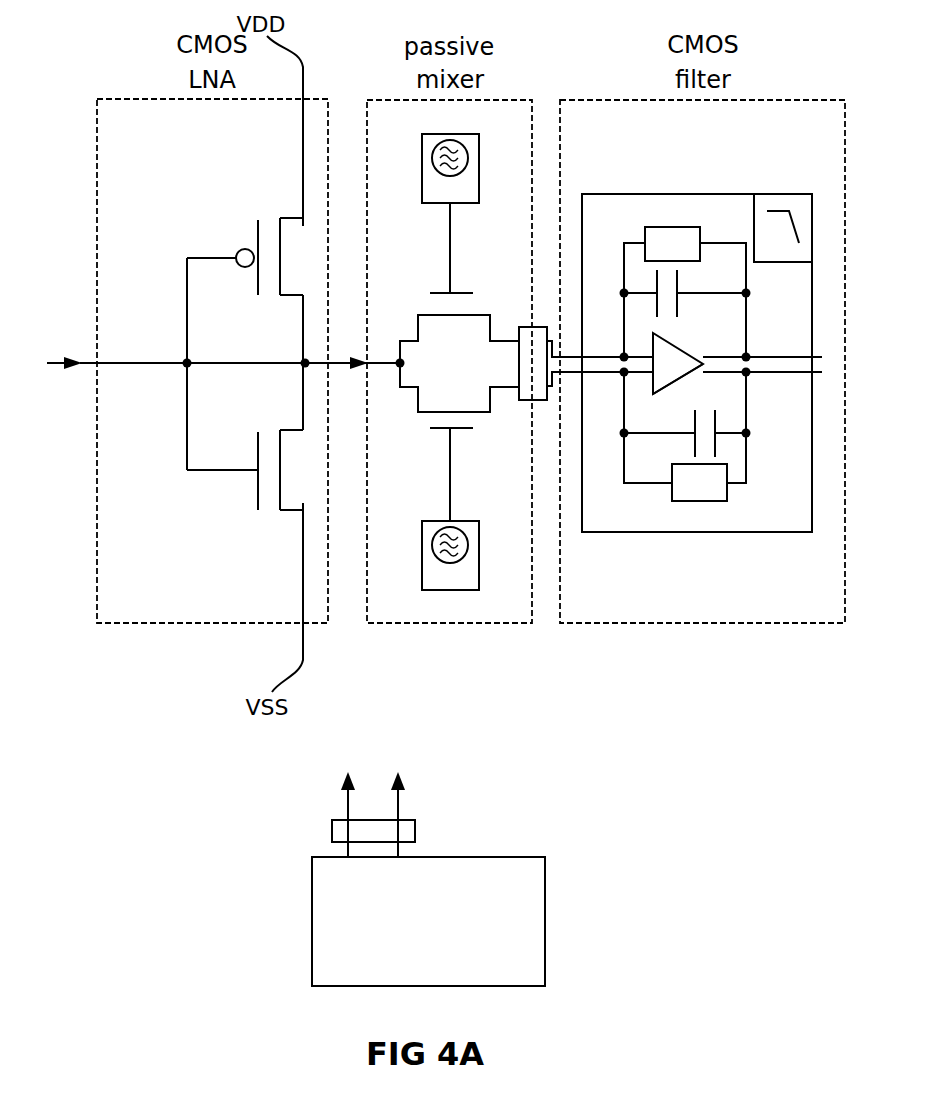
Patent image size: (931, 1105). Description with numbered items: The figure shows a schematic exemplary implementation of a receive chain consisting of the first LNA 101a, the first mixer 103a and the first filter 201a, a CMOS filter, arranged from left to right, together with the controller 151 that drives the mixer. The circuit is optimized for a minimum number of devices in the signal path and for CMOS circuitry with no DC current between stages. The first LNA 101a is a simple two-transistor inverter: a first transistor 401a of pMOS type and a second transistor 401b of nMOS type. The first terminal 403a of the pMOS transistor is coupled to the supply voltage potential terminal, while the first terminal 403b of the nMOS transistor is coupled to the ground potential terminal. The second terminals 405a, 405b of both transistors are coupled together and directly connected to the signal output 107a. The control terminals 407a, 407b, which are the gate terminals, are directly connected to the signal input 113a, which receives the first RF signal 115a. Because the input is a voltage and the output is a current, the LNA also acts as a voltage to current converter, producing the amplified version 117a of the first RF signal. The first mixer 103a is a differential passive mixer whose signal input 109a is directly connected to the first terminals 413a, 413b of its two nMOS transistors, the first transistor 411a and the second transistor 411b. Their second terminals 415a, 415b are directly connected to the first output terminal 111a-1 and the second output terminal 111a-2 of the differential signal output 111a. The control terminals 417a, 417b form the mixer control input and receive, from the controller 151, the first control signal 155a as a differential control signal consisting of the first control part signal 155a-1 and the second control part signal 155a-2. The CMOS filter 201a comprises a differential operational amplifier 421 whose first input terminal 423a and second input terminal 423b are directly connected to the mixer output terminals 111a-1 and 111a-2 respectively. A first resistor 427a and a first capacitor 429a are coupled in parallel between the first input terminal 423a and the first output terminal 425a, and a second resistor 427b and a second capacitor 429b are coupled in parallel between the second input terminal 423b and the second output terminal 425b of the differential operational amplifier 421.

The first LNA 101a is at (215, 625).
The first mixer 103a is at (452, 625).
The first filter 201a is at (712, 625).
The signal output 107a is at (335, 362).
The signal input 109a is at (363, 369).
The signal output 111a is at (538, 402).
The first output terminal 111a-1 is at (535, 337).
The second output terminal 111a-2 is at (537, 402).
The signal input 113a is at (97, 366).
The first RF signal 115a is at (66, 360).
The amplified version of the first RF signal 117a is at (344, 367).
The first transistor 401a is at (281, 256).
The second transistor 401b is at (282, 477).
The first terminal 403a is at (302, 218).
The first terminal 403b is at (304, 513).
The second terminal 405a is at (303, 300).
The second terminal 405b is at (304, 428).
The control terminal 407a is at (240, 255).
The control terminal 407b is at (257, 481).
The first transistor 411a is at (455, 317).
The second transistor 411b is at (455, 412).
The first terminal 413a is at (418, 330).
The first terminal 413b is at (418, 398).
The second terminal 415a is at (490, 330).
The second terminal 415b is at (490, 398).
The control terminal 417a is at (451, 290).
The control terminal 417b is at (451, 440).
The differential operational amplifier 421 is at (705, 366).
The first input terminal 423a is at (623, 356).
The second input terminal 423b is at (623, 373).
The first output terminal 425a is at (670, 343).
The second output terminal 425b is at (679, 383).
The first resistor 427a is at (675, 226).
The second resistor 427b is at (698, 502).
The first capacitor 429a is at (678, 291).
The second capacitor 429b is at (716, 450).
The controller 151 is at (546, 918).
The first control signal 155a is at (416, 830).
The first control part signal 155a-1 is at (450, 255).
The second control part signal 155a-2 is at (450, 470).